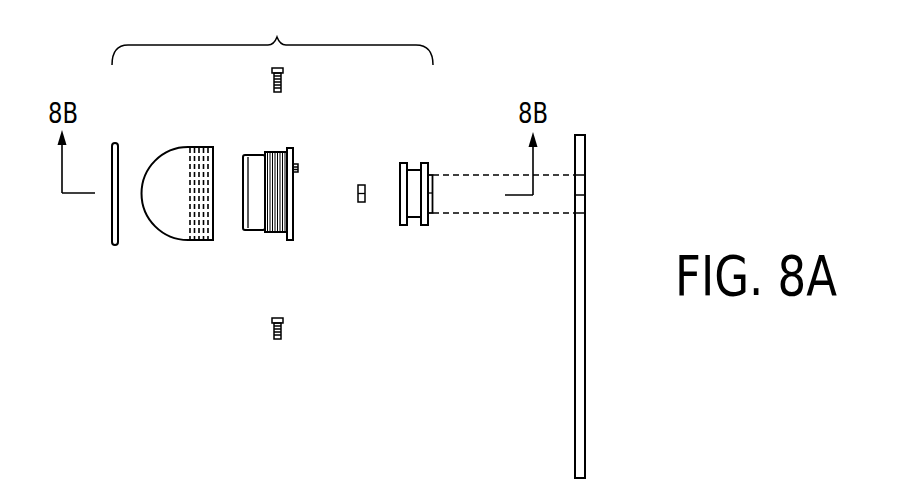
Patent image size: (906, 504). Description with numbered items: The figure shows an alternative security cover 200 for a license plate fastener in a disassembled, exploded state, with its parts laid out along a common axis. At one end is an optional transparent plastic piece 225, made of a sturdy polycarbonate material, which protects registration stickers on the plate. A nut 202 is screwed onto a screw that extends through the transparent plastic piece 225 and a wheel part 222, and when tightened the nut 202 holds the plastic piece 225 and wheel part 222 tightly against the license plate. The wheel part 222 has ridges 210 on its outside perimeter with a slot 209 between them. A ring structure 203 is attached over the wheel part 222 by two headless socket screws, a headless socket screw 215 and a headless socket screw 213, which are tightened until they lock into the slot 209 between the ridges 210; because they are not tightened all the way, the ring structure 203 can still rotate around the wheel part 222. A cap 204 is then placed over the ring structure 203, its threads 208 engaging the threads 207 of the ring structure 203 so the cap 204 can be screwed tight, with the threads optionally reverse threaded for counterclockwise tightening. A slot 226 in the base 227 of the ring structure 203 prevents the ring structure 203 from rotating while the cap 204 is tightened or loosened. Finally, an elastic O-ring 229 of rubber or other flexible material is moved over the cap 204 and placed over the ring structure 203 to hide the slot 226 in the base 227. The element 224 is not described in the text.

The security cover 200 is at (272, 32).
The nut 202 is at (357, 200).
The ring structure 203 is at (277, 199).
The cap 204 is at (199, 235).
The threads 207 is at (265, 232).
The threads 208 is at (208, 222).
The slot 209 is at (433, 198).
The ridges 210 is at (403, 225).
The headless socket screw 213 is at (283, 325).
The headless socket screw 215 is at (284, 72).
The wheel part 222 is at (450, 163).
The connector 224 is at (433, 193).
The transparent plastic piece 225 is at (575, 375).
The slot 226 is at (297, 170).
The base 227 is at (291, 148).
The O-ring 229 is at (115, 245).